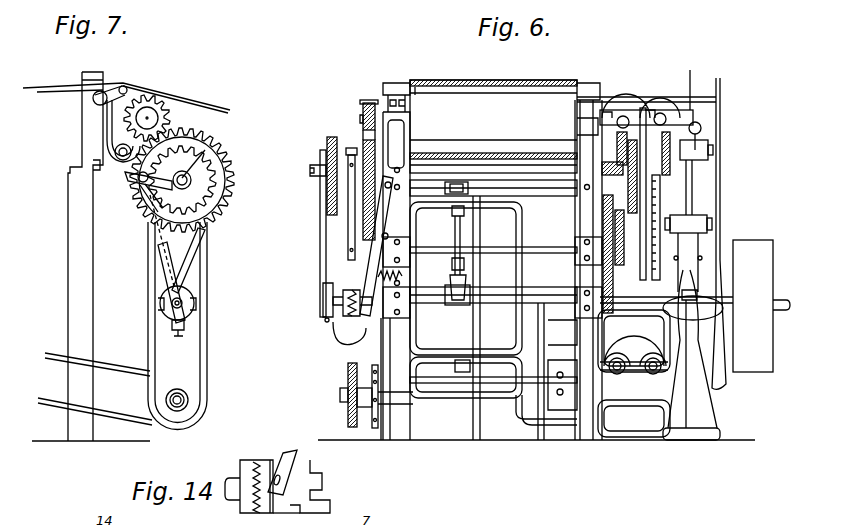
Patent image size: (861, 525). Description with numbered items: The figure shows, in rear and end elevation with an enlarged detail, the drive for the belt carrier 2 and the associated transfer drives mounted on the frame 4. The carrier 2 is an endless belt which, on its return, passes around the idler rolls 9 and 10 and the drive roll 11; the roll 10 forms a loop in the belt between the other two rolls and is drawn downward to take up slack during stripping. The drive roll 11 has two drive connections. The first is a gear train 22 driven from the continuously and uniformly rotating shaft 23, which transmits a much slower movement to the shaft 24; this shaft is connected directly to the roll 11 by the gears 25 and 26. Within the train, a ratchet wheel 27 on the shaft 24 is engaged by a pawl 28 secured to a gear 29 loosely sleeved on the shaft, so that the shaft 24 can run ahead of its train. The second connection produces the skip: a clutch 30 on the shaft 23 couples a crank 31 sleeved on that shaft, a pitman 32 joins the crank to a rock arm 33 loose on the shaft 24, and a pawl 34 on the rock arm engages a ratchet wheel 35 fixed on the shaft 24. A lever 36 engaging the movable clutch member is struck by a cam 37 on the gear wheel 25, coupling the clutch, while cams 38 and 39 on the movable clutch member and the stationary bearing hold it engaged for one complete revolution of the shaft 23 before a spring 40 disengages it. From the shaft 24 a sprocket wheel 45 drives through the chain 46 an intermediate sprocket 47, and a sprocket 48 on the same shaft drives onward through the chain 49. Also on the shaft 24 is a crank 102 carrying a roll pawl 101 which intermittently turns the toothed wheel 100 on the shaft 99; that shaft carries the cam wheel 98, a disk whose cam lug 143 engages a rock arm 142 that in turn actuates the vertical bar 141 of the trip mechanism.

In FIG. 7, the carrier 2 is at (141, 84).
In FIG. 6, the carrier 2 is at (467, 80).
In FIG. 7, the frame 4 is at (88, 279).
In FIG. 6, the frame 4 is at (399, 426).
In FIG. 7, the idler roll 9 is at (96, 101).
In FIG. 7, the idler roll 10 is at (116, 153).
In FIG. 7, the drive roll 11 is at (160, 110).
In FIG. 6, the drive roll 11 is at (427, 99).
In FIG. 6, the gear train 22 is at (626, 242).
In FIG. 6, the shaft 23 is at (530, 300).
In FIG. 7, the shaft 24 is at (206, 150).
In FIG. 6, the shaft 24 is at (549, 185).
In FIG. 7, the gear wheel 25 is at (231, 172).
In FIG. 6, the gear wheel 25 is at (360, 140).
In FIG. 7, the gear 26 is at (169, 117).
In FIG. 6, the gear 26 is at (367, 101).
In FIG. 6, the ratchet wheel 27 is at (640, 198).
In FIG. 6, the pawl 28 is at (628, 153).
In FIG. 6, the gear 29 is at (577, 126).
In FIG. 7, the clutch 30 is at (195, 299).
In FIG. 14, the clutch 30 is at (262, 461).
In FIG. 6, the clutch 30 is at (341, 330).
In FIG. 7, the crank 31 is at (176, 325).
In FIG. 6, the crank 31 is at (324, 304).
In FIG. 7, the pitman 32 is at (160, 263).
In FIG. 6, the pitman 32 is at (319, 238).
In FIG. 7, the rock arm 33 is at (130, 177).
In FIG. 6, the rock arm 33 is at (311, 168).
In FIG. 7, the pawl 34 is at (140, 195).
In FIG. 7, the ratchet wheel 35 is at (190, 185).
In FIG. 7, the lever 36 is at (199, 263).
In FIG. 14, the lever 36 is at (292, 452).
In FIG. 6, the lever 36 is at (371, 266).
In FIG. 6, the cam 37 is at (378, 172).
In FIG. 14, the cam 38 is at (297, 500).
In FIG. 6, the cam 38 is at (359, 330).
In FIG. 14, the cam 39 is at (312, 471).
In FIG. 6, the cam 39 is at (400, 303).
In FIG. 6, the spring 40 is at (403, 276).
In FIG. 6, the sprocket wheel 45 is at (348, 150).
In FIG. 7, the chain 46 is at (208, 344).
In FIG. 6, the chain 46 is at (349, 236).
In FIG. 7, the intermediate sprocket 47 is at (190, 399).
In FIG. 6, the intermediate sprocket 47 is at (347, 373).
In FIG. 6, the sprocket 48 is at (376, 430).
In FIG. 7, the chain 49 is at (122, 356).
In FIG. 6, the cam wheel 98 is at (705, 175).
In FIG. 6, the shaft 99 is at (709, 223).
In FIG. 6, the toothed wheel 100 is at (656, 252).
In FIG. 6, the pawl 101 is at (704, 142).
In FIG. 6, the crank 102 is at (701, 128).
In FIG. 6, the vertical bar 141 is at (716, 165).
In FIG. 6, the rock arm 142 is at (713, 162).
In FIG. 6, the cam lug 143 is at (686, 165).